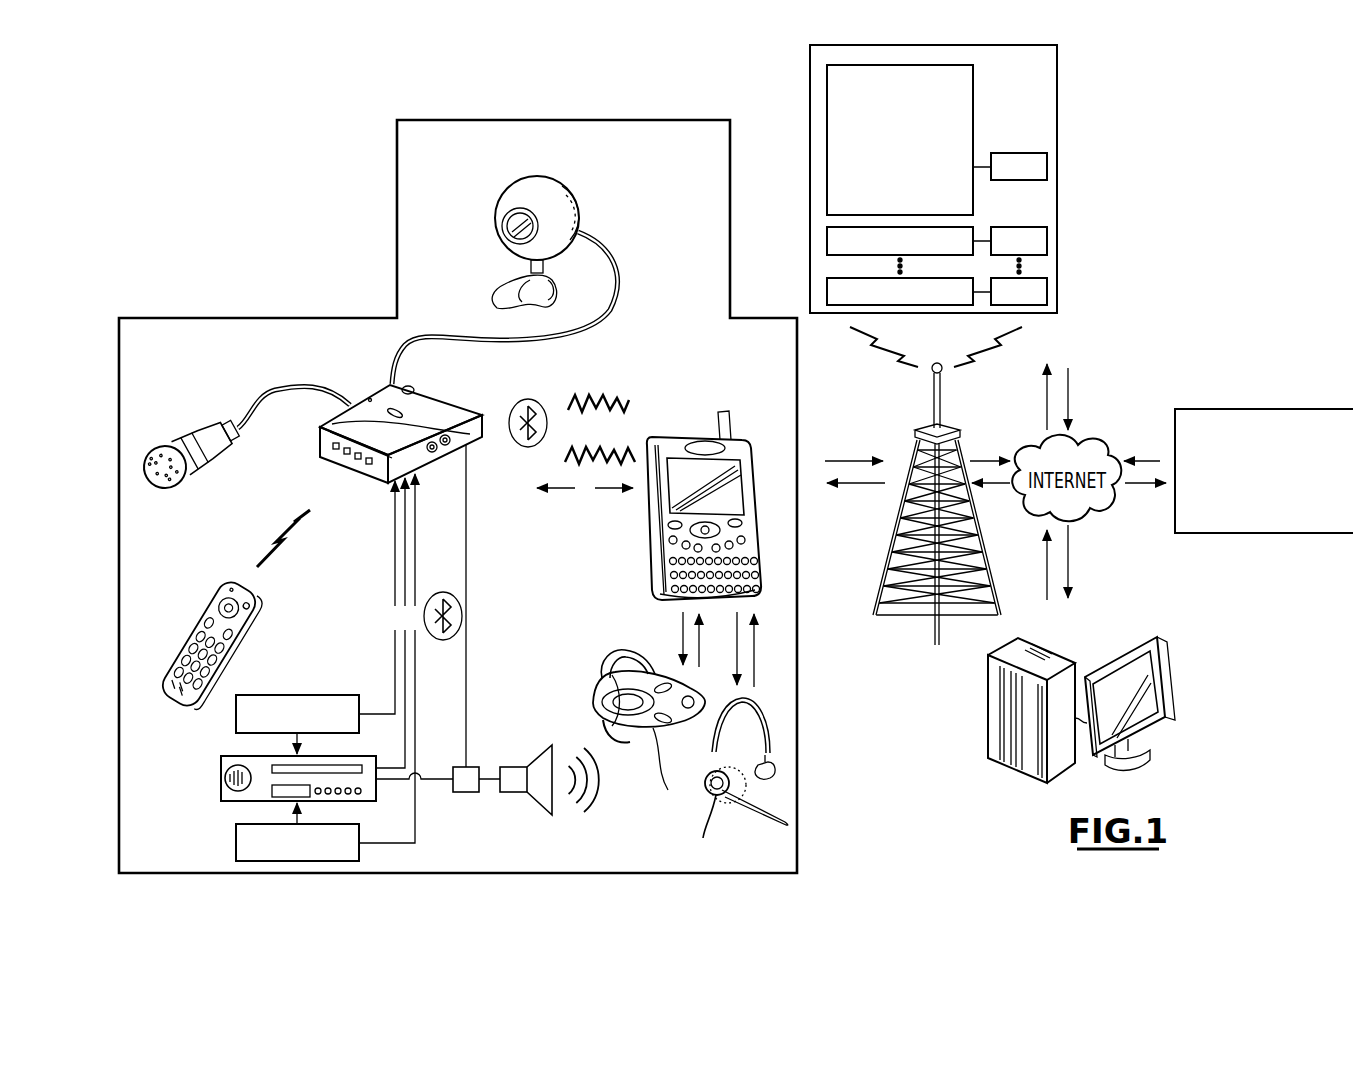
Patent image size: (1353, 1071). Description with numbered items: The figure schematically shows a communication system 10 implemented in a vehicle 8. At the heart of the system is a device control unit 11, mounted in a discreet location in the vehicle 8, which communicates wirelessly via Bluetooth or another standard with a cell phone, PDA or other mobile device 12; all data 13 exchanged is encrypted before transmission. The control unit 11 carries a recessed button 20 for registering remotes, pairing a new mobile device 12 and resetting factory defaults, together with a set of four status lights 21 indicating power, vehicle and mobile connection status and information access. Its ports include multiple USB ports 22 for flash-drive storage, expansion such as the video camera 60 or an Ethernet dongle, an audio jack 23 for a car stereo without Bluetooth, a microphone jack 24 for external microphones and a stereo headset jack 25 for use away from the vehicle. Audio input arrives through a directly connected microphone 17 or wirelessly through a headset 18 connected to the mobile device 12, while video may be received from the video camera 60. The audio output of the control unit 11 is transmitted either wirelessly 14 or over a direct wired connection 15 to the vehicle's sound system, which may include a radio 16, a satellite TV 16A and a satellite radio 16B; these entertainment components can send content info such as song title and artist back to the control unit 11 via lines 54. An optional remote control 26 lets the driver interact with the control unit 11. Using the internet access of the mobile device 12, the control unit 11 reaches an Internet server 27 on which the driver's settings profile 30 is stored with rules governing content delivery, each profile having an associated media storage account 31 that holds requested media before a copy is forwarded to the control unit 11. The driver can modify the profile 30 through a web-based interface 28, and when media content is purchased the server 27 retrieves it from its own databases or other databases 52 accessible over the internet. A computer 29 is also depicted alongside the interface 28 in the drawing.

The communication system 10 is at (218, 254).
The vehicle 8 is at (283, 318).
The video camera 60 is at (572, 200).
The recessed button 20 is at (408, 386).
The status lights 21 is at (436, 406).
The USB ports 22 is at (334, 445).
The audio jack 23 is at (345, 455).
The microphone jack 24 is at (357, 461).
The stereo headset jack 25 is at (368, 466).
The device control unit 11 is at (433, 458).
The microphone 17 is at (193, 440).
The data 13 is at (590, 400).
The mobile device 12 is at (692, 436).
The remote control 26 is at (197, 618).
The lines 54 is at (416, 578).
The satellite TV 16A is at (302, 695).
The wireless connection 14 is at (442, 642).
The wired connection 15 is at (466, 721).
The radio 16 is at (221, 778).
The satellite radio 16B is at (236, 843).
The headset 18 is at (712, 784).
The Internet server 27 is at (1057, 100).
The settings profile 30 is at (827, 128).
The media storage account 31 is at (1047, 167).
The databases 52 is at (1265, 409).
The web-based interface 28 is at (1140, 690).
The computer 29 is at (988, 727).